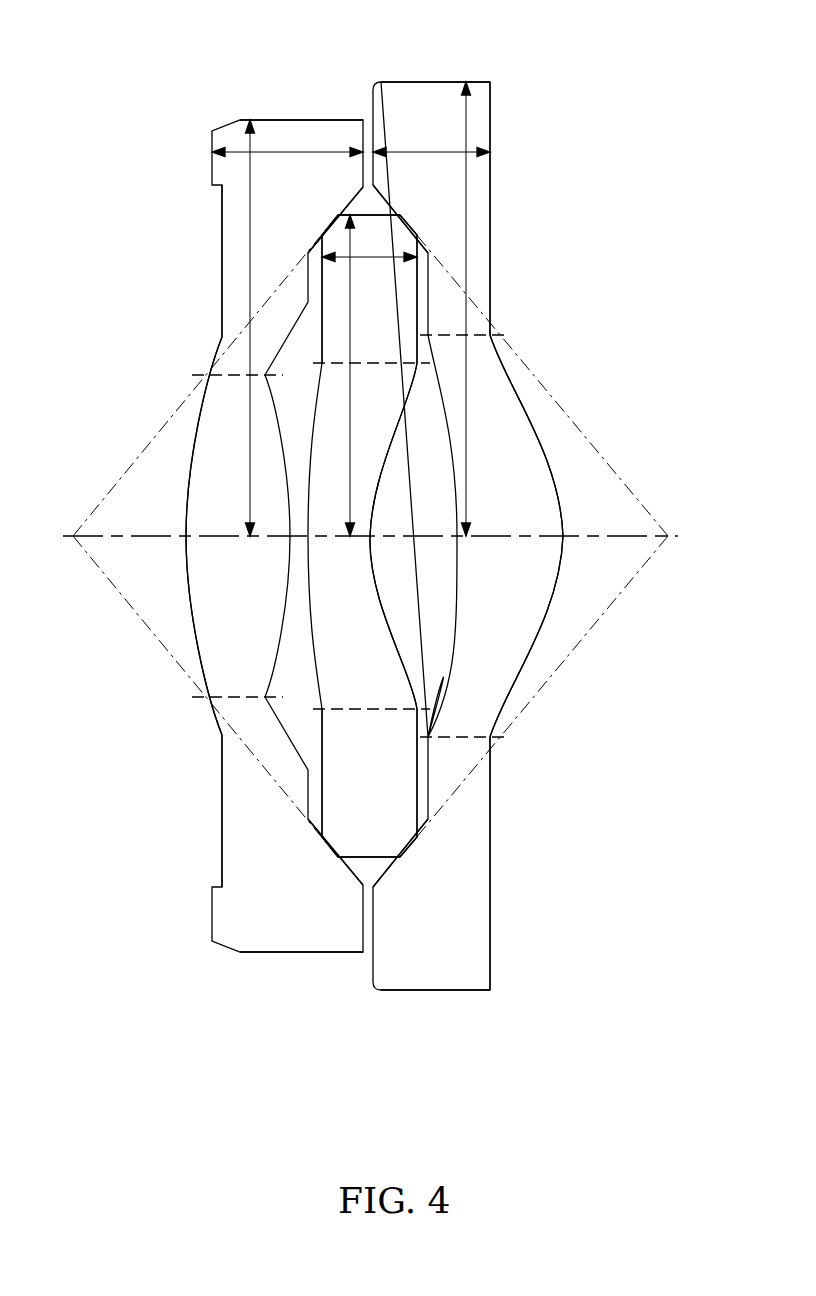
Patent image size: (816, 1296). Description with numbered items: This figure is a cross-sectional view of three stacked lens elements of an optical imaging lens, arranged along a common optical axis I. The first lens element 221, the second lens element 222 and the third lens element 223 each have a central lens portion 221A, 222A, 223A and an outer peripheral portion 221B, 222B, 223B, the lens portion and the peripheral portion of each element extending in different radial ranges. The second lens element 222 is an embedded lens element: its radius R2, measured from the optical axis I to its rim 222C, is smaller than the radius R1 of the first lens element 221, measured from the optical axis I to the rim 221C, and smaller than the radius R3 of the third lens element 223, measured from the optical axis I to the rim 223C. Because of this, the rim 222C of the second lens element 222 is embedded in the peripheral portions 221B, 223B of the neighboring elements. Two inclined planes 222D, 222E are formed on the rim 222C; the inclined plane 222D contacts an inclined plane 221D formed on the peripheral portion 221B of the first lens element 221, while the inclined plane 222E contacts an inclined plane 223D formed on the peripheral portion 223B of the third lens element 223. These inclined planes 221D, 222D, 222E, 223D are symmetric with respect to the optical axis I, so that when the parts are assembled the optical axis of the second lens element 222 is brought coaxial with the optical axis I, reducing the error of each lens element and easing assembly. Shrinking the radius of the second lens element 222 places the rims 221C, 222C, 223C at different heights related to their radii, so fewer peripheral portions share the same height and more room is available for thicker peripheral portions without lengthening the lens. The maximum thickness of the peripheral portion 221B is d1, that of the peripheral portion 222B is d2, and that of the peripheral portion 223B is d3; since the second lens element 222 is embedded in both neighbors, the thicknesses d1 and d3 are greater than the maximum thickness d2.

The first lens element 221 is at (255, 913).
The lens portion 221A is at (200, 512).
The peripheral portion 221B is at (235, 287).
The rim 221C is at (280, 120).
The inclined plane 221D is at (345, 203).
The second lens element 222 is at (370, 602).
The lens portion 222A is at (360, 515).
The peripheral portion 222B is at (377, 350).
The rim 222C is at (368, 215).
The inclined plane 222D is at (320, 238).
The inclined plane 222E is at (407, 222).
The third lens element 223 is at (465, 948).
The lens portion 223A is at (547, 527).
The peripheral portion 223B is at (484, 290).
The rim 223C is at (437, 78).
The inclined plane 223D is at (393, 195).
The maximum thickness of the peripheral portion 221B d1 is at (287, 141).
The maximum thickness of the peripheral portion 222B d2 is at (369, 244).
The maximum thickness of the peripheral portion 223B d3 is at (431, 141).
The radius of the first lens element R1 is at (265, 328).
The radius of the second lens element R2 is at (365, 375).
The radius of the third lens element R3 is at (481, 309).
The optical axis I is at (385, 536).